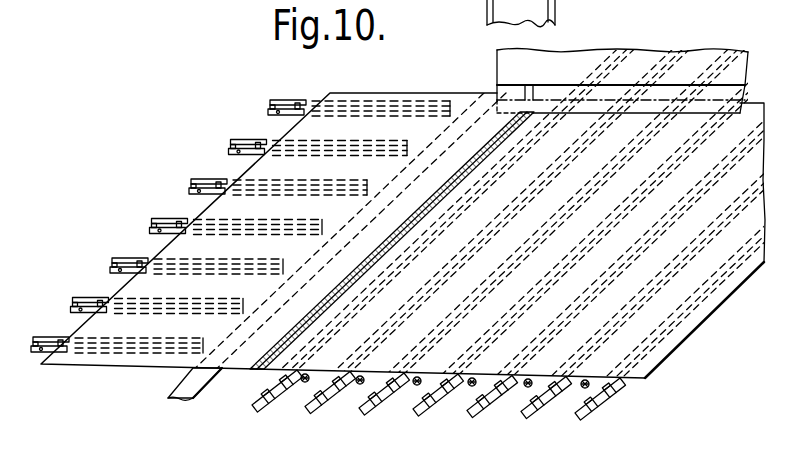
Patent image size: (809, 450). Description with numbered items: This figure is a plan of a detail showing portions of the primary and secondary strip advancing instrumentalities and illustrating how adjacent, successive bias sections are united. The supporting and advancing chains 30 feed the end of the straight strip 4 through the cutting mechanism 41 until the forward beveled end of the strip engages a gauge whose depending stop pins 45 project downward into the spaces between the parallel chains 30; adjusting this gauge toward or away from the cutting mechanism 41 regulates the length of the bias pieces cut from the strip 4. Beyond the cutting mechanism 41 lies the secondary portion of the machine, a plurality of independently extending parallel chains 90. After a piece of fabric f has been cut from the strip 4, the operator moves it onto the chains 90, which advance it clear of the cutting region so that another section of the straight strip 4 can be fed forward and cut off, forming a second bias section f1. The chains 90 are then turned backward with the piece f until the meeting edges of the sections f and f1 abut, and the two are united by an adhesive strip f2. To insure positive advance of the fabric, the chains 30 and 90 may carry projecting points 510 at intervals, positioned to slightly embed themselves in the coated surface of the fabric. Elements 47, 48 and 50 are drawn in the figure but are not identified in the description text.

The straight strip 4 is at (382, 93).
The cutting mechanism 41 is at (489, 69).
The beam top 47 is at (604, 53).
The beam end 48 is at (735, 94).
The projecting points 510 is at (317, 107).
The parallel chains 90 is at (211, 181).
The piece of fabric f is at (125, 368).
The section of bias fabric f1 is at (650, 372).
The adhesive strip f2 is at (242, 373).
The supporting and advancing chains 30 is at (373, 402).
The rail clamp 50 is at (540, 407).
The stop pins 45 is at (302, 384).